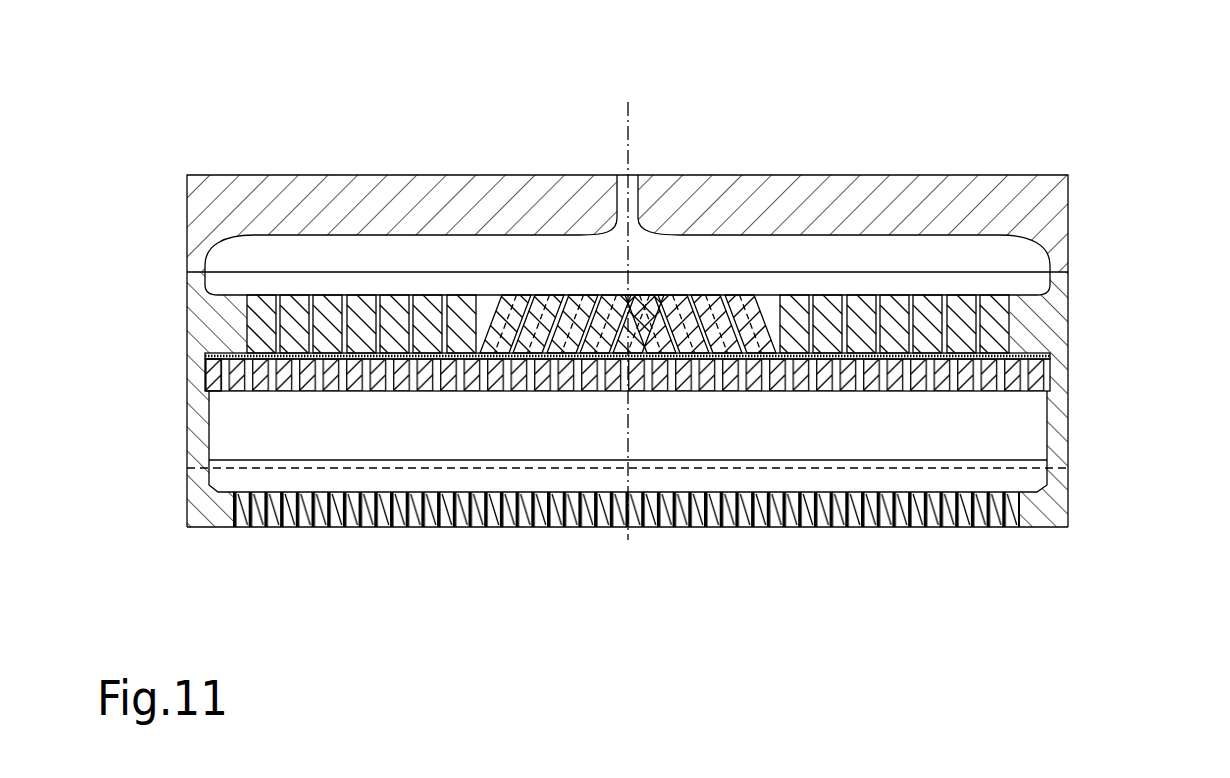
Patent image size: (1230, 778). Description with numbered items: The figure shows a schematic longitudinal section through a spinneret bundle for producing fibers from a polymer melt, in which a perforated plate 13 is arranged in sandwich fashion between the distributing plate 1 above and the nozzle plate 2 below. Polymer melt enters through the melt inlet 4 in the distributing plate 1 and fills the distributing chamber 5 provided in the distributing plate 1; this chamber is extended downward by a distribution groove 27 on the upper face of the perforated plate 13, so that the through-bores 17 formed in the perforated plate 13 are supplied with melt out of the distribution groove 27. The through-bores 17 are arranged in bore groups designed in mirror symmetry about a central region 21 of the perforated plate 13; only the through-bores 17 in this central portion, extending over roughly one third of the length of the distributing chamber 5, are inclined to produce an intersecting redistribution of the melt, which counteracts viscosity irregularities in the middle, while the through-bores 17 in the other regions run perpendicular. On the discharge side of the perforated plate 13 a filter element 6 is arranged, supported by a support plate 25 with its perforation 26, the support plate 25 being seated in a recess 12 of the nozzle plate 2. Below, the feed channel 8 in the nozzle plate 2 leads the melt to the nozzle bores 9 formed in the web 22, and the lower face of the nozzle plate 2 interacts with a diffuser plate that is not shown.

The distributing plate 1 is at (1043, 193).
The nozzle plate 2 is at (1050, 440).
The melt inlet 4 is at (638, 176).
The distributing chamber 5 is at (753, 250).
The filter element 6 is at (1063, 322).
The feed channel 8 is at (255, 435).
The nozzle bores 9 is at (297, 530).
The recess 12 is at (1047, 397).
The perforated plate 13 is at (1068, 292).
The through-bore 17 is at (260, 330).
The central region of the plate 21 is at (627, 137).
The web 22 is at (1055, 495).
The support plate 25 is at (1047, 365).
The perforation 26 is at (247, 391).
The distribution groove 27 is at (268, 292).